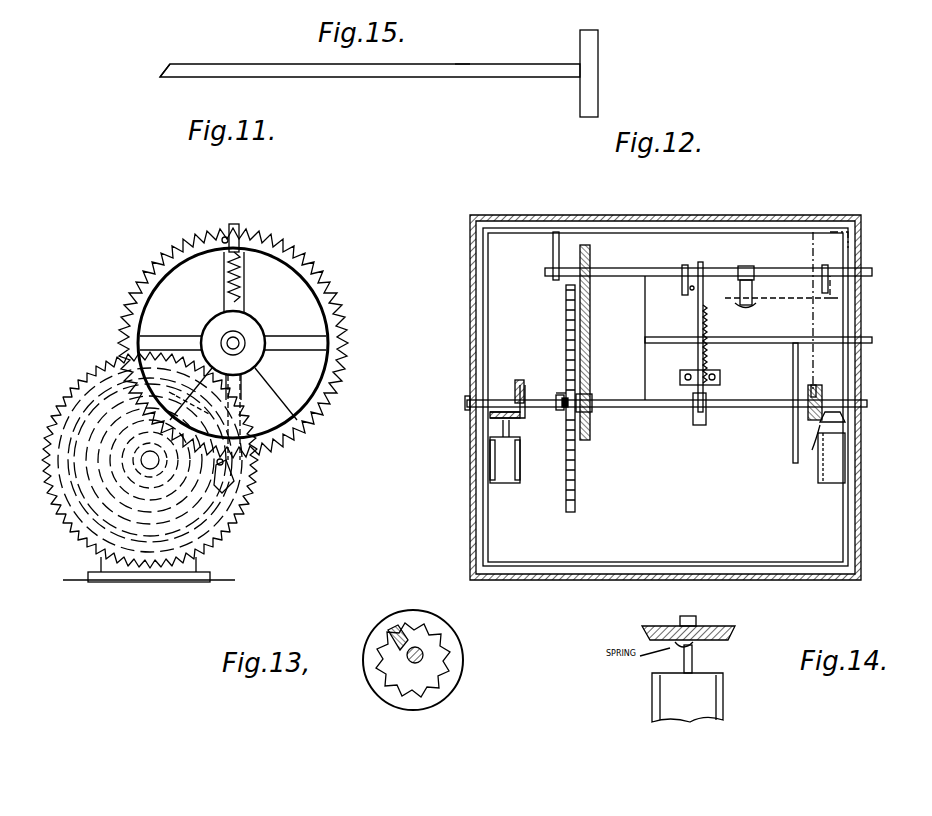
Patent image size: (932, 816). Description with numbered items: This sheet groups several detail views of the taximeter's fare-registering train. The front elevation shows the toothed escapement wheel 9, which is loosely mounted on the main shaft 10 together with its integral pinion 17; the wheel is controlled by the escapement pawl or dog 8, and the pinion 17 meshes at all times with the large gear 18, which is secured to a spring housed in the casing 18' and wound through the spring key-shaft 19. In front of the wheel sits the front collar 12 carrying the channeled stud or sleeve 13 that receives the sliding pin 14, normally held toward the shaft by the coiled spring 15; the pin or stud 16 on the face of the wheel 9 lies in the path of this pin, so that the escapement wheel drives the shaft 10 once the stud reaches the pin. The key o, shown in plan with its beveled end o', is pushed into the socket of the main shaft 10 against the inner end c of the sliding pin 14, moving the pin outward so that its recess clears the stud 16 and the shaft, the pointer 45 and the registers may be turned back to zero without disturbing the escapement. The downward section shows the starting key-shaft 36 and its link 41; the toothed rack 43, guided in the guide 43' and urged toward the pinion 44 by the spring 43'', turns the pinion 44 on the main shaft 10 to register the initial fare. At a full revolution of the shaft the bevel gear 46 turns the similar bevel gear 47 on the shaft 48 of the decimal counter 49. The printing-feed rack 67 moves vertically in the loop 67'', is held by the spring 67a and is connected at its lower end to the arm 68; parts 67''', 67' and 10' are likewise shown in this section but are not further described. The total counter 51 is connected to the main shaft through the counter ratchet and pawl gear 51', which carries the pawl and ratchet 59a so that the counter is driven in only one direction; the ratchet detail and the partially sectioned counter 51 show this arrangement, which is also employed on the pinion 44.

In FIG. 15, the key o is at (467, 52).
In FIG. 15, the beveled end o' is at (158, 58).
In FIG. 11, the toothed escapement wheel 9 is at (300, 262).
In FIG. 12, the toothed escapement wheel 9 is at (576, 450).
In FIG. 11, the channeled stud or sleeve 13 is at (243, 318).
In FIG. 11, the inner end of sliding pin c is at (245, 340).
In FIG. 11, the front collar 12 is at (248, 352).
In FIG. 12, the front collar 12 is at (563, 410).
In FIG. 11, the coiled spring 15 is at (243, 273).
In FIG. 11, the sliding pin 14 is at (240, 232).
In FIG. 12, the sliding pin 14 is at (558, 398).
In FIG. 11, the pin or stud 16 is at (228, 238).
In FIG. 12, the pin or stud 16 is at (562, 395).
In FIG. 11, the spring casing 18' is at (163, 460).
In FIG. 12, the spring casing 18' is at (758, 338).
In FIG. 11, the spring key-shaft 19 is at (150, 462).
In FIG. 11, the escapement pawl or dog 8 is at (150, 460).
In FIG. 11, the main shaft 10 is at (189, 402).
In FIG. 12, the main shaft 10 is at (667, 416).
In FIG. 12, the starting key-shaft 36 is at (786, 268).
In FIG. 12, the large gear 18 is at (599, 342).
In FIG. 12, the pinion 17 is at (592, 395).
In FIG. 12, the bevel gear 46 is at (519, 380).
In FIG. 12, the bevel gear 47 is at (490, 418).
In FIG. 12, the pointer 45 is at (468, 398).
In FIG. 12, the counter shaft 48 is at (510, 430).
In FIG. 12, the decimal counter 49 is at (512, 470).
In FIG. 12, the toothed rack 43 is at (683, 337).
In FIG. 12, the spring 43'' is at (725, 344).
In FIG. 12, the guide 43' is at (714, 383).
In FIG. 12, the pinion 44 is at (699, 424).
In FIG. 12, the link 41 is at (692, 288).
In FIG. 12, the cap 67''' is at (738, 258).
In FIG. 12, the rack 67 is at (751, 303).
In FIG. 12, the loop 67'' is at (731, 314).
In FIG. 12, the arm 68 is at (756, 300).
In FIG. 12, the link 67' is at (853, 311).
In FIG. 12, the pin 10' is at (826, 376).
In FIG. 12, the spring 67a is at (796, 463).
In FIG. 12, the counter ratchet and pawl gear 51' is at (854, 403).
In FIG. 13, the counter ratchet and pawl gear 51' is at (430, 659).
In FIG. 14, the counter ratchet and pawl gear 51' is at (708, 621).
In FIG. 12, the Veeder counter 51 is at (851, 454).
In FIG. 14, the Veeder counter 51 is at (687, 683).
In FIG. 13, the pawl and ratchet 59a is at (442, 650).
In FIG. 14, the pawl and ratchet 59a is at (710, 640).